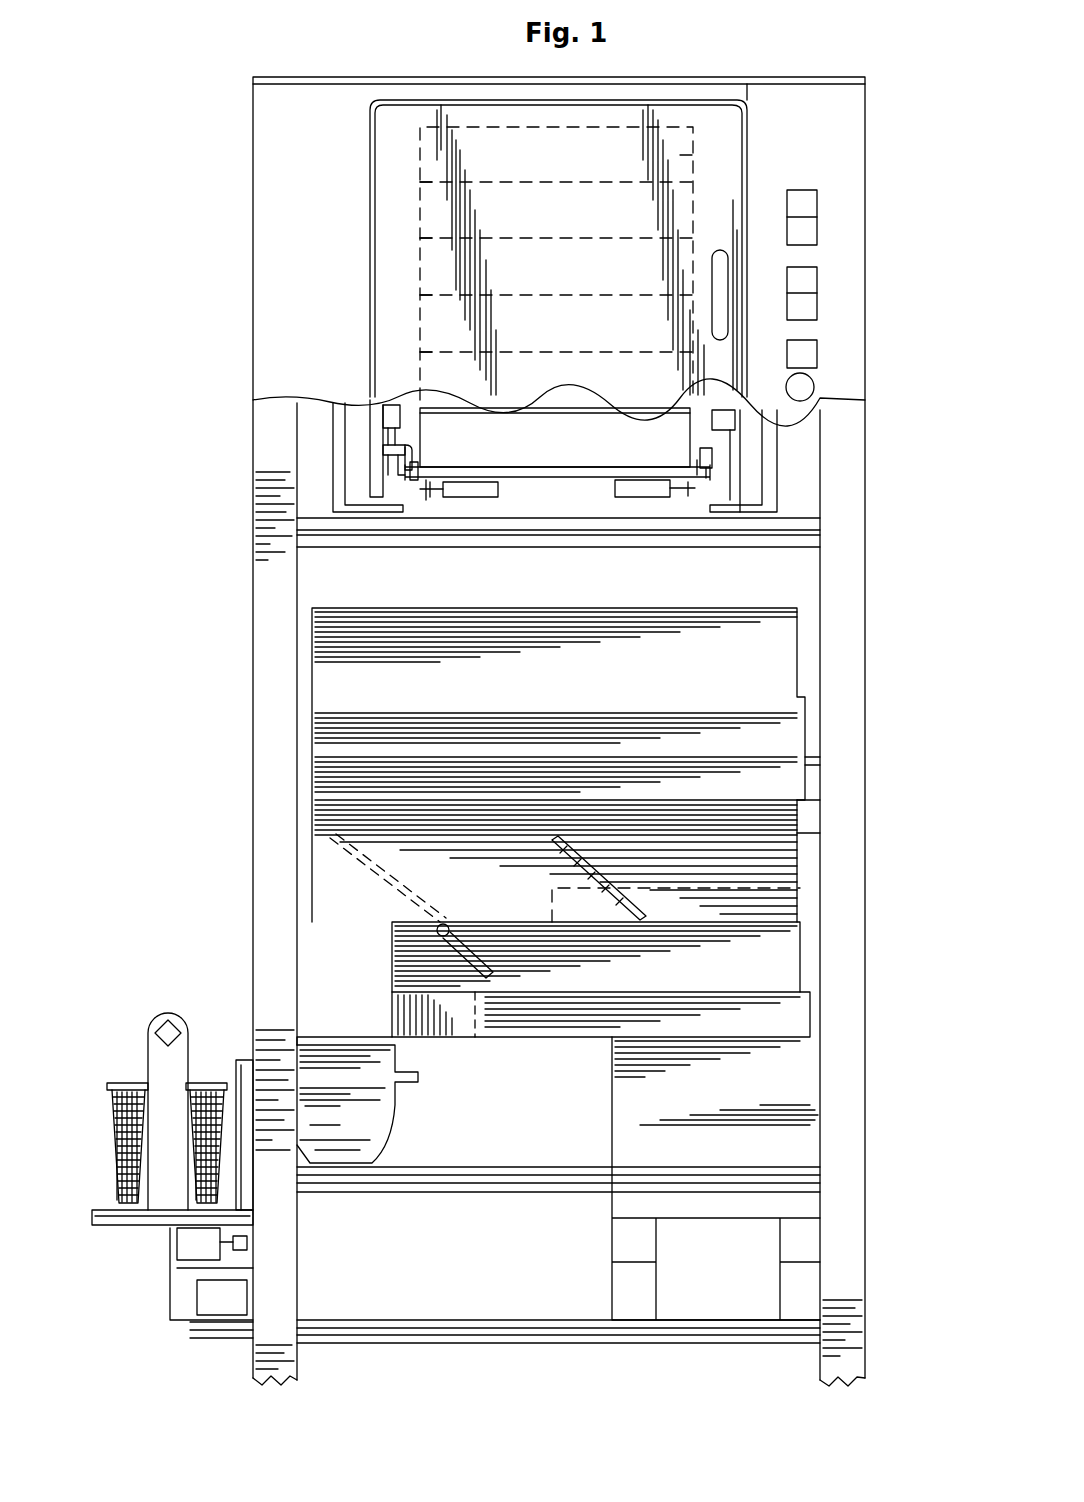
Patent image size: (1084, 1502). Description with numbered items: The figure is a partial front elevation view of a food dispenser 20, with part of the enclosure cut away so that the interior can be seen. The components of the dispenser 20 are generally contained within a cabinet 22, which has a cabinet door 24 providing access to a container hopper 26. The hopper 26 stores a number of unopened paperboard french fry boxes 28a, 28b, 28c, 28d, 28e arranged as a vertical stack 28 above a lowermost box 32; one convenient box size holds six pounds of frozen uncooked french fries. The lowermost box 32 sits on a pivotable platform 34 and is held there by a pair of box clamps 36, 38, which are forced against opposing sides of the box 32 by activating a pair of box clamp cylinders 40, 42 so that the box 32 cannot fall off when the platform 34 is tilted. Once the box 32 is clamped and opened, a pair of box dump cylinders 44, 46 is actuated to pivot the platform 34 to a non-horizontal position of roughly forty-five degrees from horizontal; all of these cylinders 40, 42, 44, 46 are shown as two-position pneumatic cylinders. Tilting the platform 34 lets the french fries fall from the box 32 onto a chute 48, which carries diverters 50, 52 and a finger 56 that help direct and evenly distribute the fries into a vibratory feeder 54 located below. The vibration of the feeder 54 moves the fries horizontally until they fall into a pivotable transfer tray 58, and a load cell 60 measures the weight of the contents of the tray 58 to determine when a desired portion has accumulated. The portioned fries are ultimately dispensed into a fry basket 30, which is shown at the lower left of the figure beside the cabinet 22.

The dispenser 20 is at (725, 68).
The cabinet 22 is at (865, 200).
The cabinet door 24 is at (760, 125).
The container hopper 26 is at (390, 177).
The vertical stack 28 is at (505, 125).
The french fry box 28a is at (693, 157).
The french fry box 28b is at (420, 182).
The french fry box 28c is at (420, 238).
The french fry box 28d is at (420, 295).
The french fry box 28e is at (420, 352).
The fry basket 30 is at (125, 1083).
The lowermost box 32 is at (463, 430).
The pivotable platform 34 is at (600, 480).
The box clamp 36 is at (385, 455).
The box clamp 38 is at (720, 464).
The box clamp cylinder 40 is at (460, 490).
The box clamp cylinder 42 is at (640, 487).
The box dump cylinder 44 is at (390, 417).
The box dump cylinder 46 is at (725, 425).
The chute 48 is at (785, 665).
The diverter 50 is at (385, 882).
The diverter 52 is at (640, 905).
The vibratory feeder 54 is at (790, 958).
The finger 56 is at (440, 952).
The pivotable transfer tray 58 is at (335, 1110).
The load cell 60 is at (200, 1243).